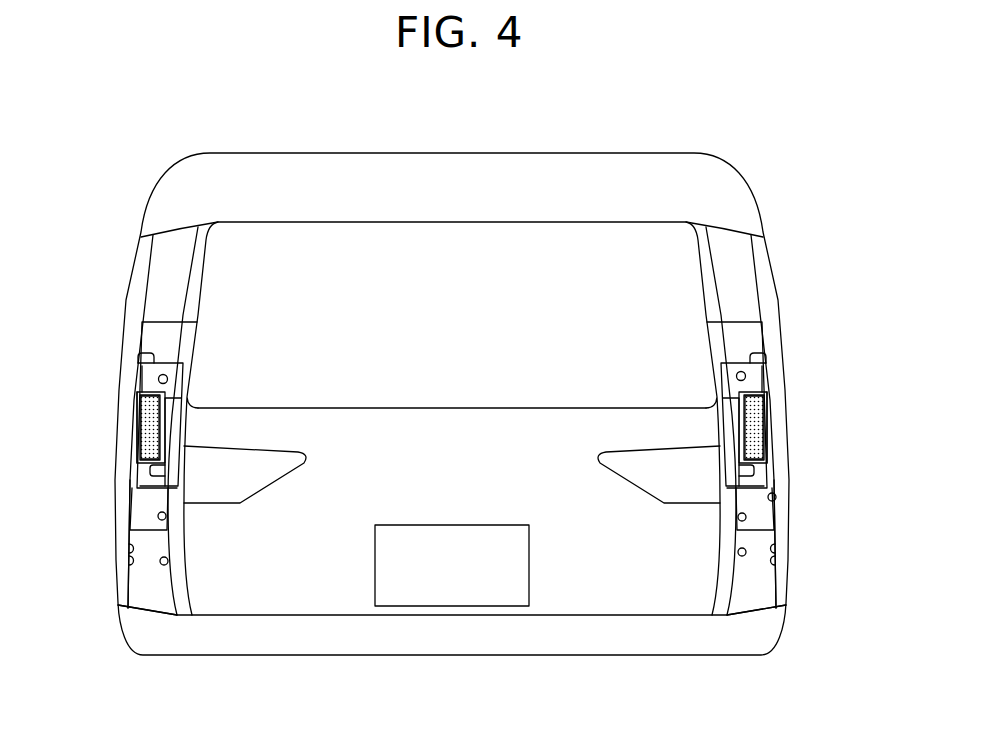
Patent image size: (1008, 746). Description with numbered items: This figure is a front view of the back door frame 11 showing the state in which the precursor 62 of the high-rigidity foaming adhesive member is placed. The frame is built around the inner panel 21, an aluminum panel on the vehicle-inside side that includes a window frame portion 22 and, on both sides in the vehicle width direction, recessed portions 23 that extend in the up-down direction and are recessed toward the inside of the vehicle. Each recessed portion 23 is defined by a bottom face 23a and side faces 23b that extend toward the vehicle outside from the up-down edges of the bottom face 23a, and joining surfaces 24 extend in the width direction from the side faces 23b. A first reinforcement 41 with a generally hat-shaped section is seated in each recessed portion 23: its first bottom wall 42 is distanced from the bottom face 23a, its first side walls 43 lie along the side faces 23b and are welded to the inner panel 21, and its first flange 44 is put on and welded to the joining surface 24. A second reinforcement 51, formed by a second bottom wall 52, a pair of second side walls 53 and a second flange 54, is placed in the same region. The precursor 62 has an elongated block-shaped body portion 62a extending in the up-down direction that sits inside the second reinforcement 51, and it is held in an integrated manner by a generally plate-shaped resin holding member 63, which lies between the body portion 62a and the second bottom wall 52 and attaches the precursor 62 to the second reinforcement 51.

The back door frame 11 is at (754, 193).
The inner panel 21 is at (535, 157).
The window frame portion 22 is at (773, 293).
The recessed portion 23 is at (130, 562).
The bottom face 23a is at (147, 580).
The side face 23b is at (130, 547).
The joining surface 24 is at (132, 305).
The first reinforcement 41 is at (160, 338).
The first bottom wall 42 is at (145, 505).
The first side wall 43 is at (166, 516).
The first flange 44 is at (187, 355).
The second reinforcement 51 is at (147, 357).
The second bottom wall 52 is at (150, 380).
The second side wall 53 is at (137, 402).
The second flange 54 is at (168, 427).
The precursor 62 is at (140, 442).
The body portion 62a is at (155, 433).
The holding member 63 is at (153, 468).